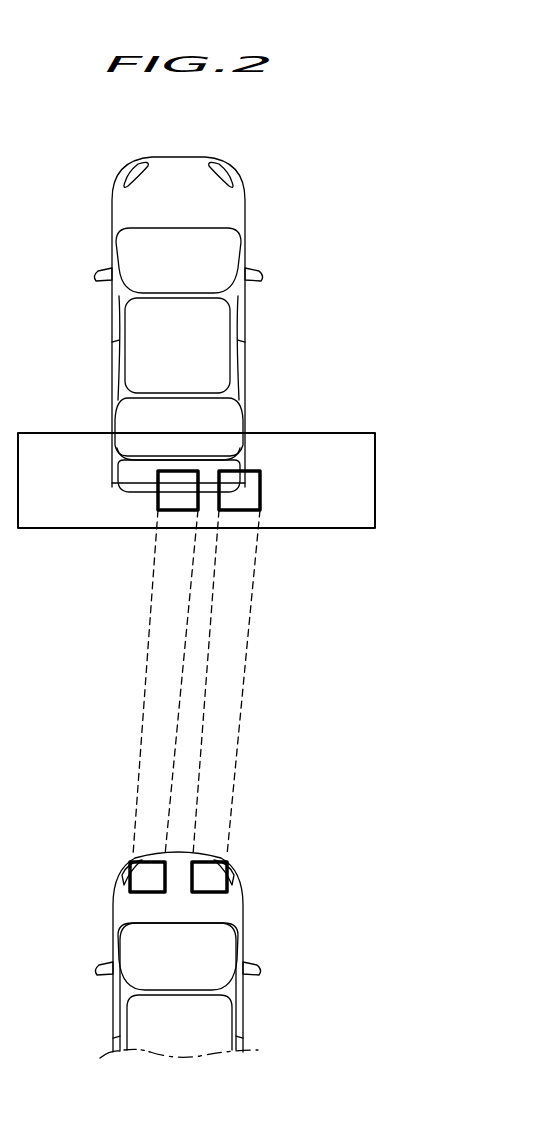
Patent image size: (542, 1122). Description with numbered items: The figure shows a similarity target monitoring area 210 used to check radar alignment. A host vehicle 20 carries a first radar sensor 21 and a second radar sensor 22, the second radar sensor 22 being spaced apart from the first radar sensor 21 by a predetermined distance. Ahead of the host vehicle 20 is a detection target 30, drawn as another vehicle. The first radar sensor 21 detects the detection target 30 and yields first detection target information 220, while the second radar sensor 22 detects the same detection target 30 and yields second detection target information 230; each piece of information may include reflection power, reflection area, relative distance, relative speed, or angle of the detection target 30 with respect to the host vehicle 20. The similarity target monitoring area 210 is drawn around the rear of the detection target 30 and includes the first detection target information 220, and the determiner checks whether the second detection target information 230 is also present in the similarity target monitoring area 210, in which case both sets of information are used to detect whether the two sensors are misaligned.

The detection target 30 is at (245, 212).
The similarity target monitoring area 210 is at (375, 453).
The first detection target information 220 is at (158, 497).
The second detection target information 230 is at (260, 497).
The host vehicle 20 is at (243, 1010).
The first radar sensor 21 is at (130, 884).
The second radar sensor 22 is at (227, 884).